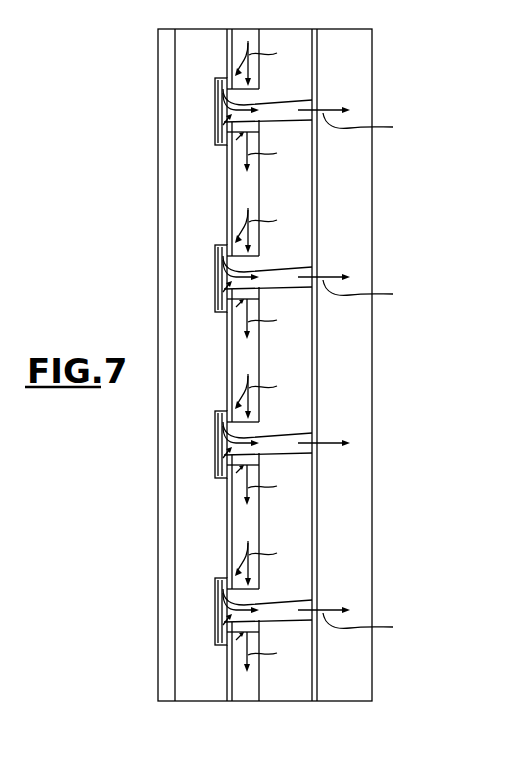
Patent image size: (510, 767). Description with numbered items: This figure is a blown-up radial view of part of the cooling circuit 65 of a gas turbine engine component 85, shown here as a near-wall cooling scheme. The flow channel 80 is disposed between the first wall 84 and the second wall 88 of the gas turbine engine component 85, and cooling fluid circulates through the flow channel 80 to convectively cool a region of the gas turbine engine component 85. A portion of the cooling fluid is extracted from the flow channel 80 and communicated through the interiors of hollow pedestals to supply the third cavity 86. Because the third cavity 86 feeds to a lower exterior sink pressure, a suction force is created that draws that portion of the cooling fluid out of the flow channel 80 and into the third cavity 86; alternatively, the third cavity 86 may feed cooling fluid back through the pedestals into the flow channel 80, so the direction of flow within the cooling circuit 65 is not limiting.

The cooling circuit 65 is at (200, 199).
The flow channel 80 is at (247, 688).
The first wall 84 is at (197, 688).
The gas turbine engine component 85 is at (430, 200).
The third cavity 86 is at (342, 688).
The second wall 88 is at (293, 688).